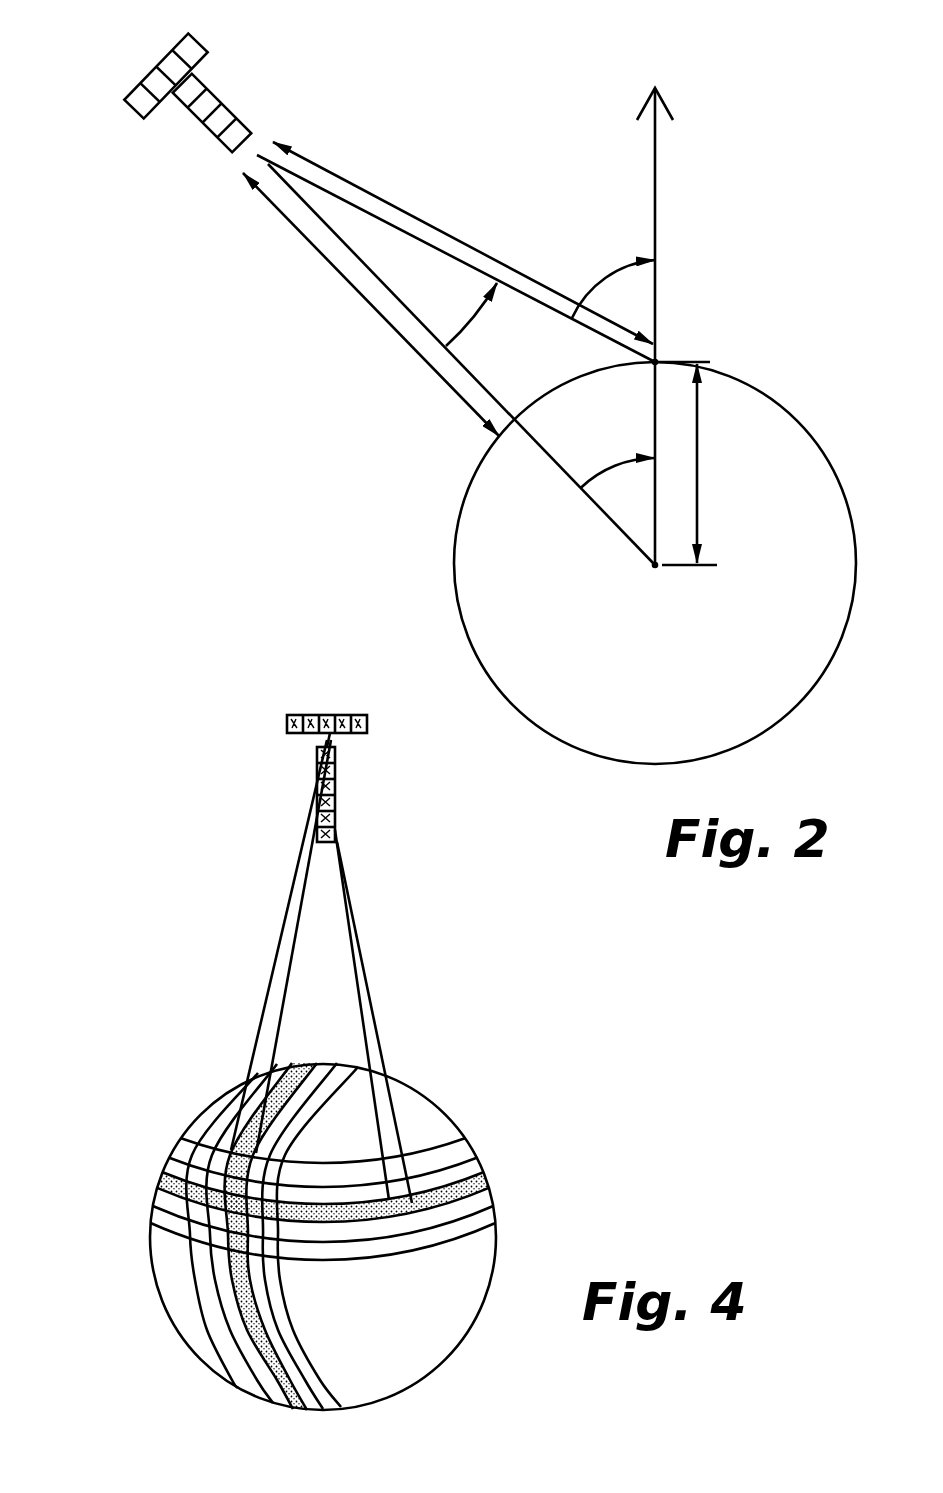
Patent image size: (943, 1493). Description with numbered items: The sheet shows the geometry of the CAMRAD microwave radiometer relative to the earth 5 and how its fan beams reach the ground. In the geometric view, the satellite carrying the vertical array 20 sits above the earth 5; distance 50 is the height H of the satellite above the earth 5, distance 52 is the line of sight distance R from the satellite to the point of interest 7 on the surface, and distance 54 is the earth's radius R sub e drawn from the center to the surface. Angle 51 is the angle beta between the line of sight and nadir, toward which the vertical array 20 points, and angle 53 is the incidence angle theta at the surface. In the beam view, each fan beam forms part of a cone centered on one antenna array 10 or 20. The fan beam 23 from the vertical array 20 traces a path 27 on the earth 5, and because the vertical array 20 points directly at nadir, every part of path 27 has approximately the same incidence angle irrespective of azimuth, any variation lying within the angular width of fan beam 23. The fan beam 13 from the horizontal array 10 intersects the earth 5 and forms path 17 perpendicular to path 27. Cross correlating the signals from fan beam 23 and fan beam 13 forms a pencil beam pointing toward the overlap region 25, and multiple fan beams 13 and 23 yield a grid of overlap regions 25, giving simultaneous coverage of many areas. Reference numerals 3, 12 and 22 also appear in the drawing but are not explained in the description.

In FIG. 2, the center of the earth 3 is at (653, 568).
In FIG. 2, the earth 5 is at (798, 525).
In FIG. 4, the earth 5 is at (428, 1337).
In FIG. 2, the point of interest 7 is at (658, 355).
In FIG. 2, the horizontal array 10 is at (158, 50).
In FIG. 4, the horizontal array 10 is at (334, 745).
In FIG. 4, the solar panel array 12 is at (310, 712).
In FIG. 4, the fan beam 13 is at (283, 933).
In FIG. 4, the path 17 is at (302, 1412).
In FIG. 2, the vertical array 20 is at (276, 66).
In FIG. 4, the vertical array 20 is at (386, 794).
In FIG. 4, the antenna elements 22 is at (334, 752).
In FIG. 4, the fan beam 23 is at (369, 978).
In FIG. 4, the overlap region 25 is at (207, 1259).
In FIG. 4, the path 27 is at (168, 1176).
In FIG. 2, the distance 50 is at (390, 326).
In FIG. 2, the angle 51 is at (460, 330).
In FIG. 2, the distance 52 is at (498, 258).
In FIG. 2, the angle 53 is at (592, 284).
In FIG. 2, the distance 54 is at (708, 435).